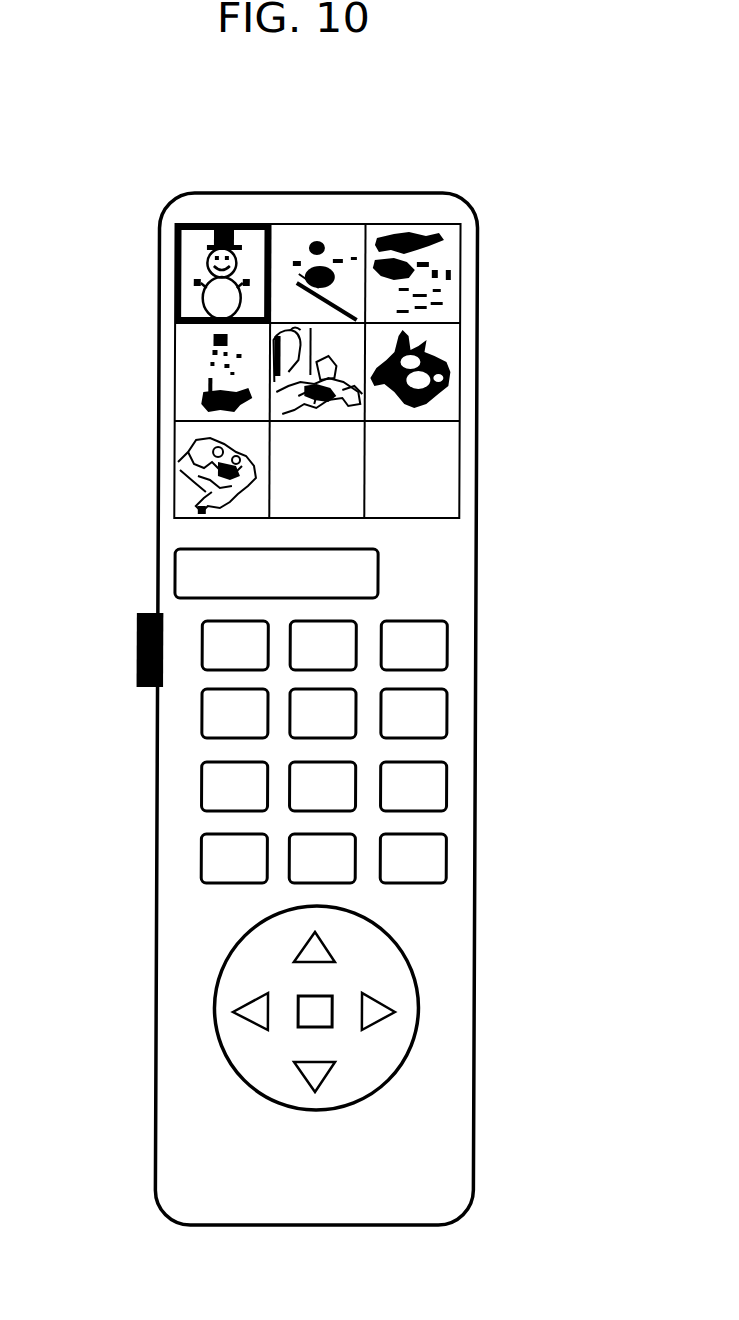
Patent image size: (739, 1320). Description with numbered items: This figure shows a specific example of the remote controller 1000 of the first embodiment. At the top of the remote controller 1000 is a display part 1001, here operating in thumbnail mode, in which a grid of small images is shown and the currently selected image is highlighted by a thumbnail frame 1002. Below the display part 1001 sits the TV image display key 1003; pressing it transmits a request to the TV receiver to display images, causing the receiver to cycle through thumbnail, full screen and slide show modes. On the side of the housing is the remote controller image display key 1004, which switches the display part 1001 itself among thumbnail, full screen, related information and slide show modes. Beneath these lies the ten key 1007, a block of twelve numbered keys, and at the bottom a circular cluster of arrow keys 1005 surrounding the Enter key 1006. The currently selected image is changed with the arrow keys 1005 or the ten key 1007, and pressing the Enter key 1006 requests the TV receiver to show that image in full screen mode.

The remote controller 1000 is at (379, 193).
The display part 1001 is at (464, 366).
The thumbnail frame 1002 is at (191, 222).
The TV image display key 1003 is at (190, 558).
The remote controller image display key 1004 is at (140, 632).
The arrow keys 1005 is at (240, 1010).
The Enter key 1006 is at (321, 1005).
The ten key 1007 is at (445, 787).